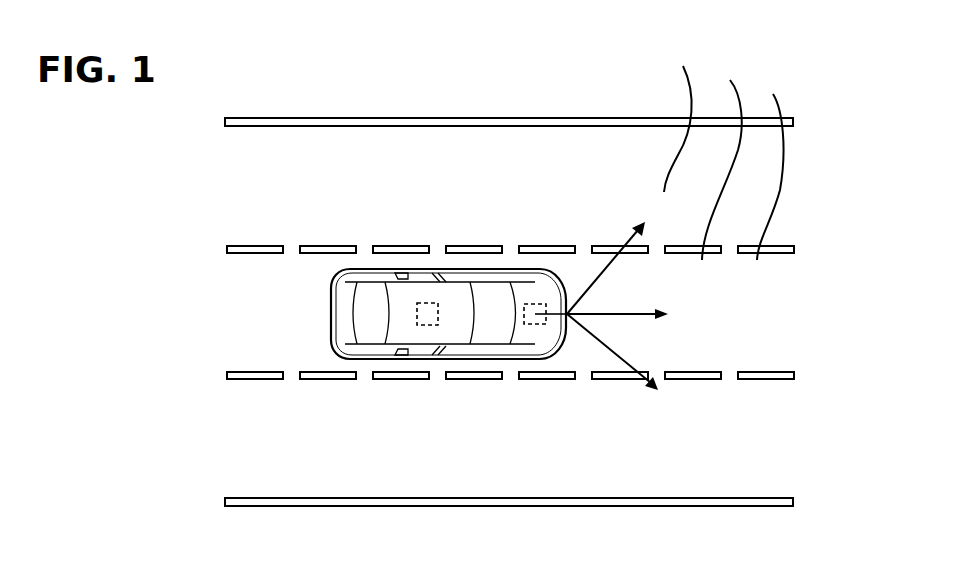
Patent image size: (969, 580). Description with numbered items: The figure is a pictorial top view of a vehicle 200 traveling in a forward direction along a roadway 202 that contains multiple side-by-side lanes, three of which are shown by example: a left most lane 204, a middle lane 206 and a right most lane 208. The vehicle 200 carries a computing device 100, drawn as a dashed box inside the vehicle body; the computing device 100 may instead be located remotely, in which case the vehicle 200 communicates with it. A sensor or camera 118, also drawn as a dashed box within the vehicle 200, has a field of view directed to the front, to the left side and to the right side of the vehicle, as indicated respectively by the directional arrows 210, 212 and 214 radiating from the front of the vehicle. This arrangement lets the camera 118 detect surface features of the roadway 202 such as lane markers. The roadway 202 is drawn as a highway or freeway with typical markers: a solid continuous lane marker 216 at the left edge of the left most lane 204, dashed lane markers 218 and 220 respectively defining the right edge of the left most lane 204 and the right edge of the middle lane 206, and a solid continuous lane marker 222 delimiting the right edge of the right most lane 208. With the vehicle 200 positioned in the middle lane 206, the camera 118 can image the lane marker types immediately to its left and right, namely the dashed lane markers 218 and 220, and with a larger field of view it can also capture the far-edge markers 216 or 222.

The computing device 100 is at (427, 325).
The sensor or camera 118 is at (533, 325).
The vehicle 200 is at (411, 256).
The roadway 202 is at (394, 110).
The left most lane 204 is at (682, 119).
The middle lane 206 is at (722, 159).
The right most lane 208 is at (771, 166).
The directional arrow 210 is at (605, 313).
The directional arrow 212 is at (603, 268).
The directional arrow 214 is at (610, 352).
The solid continuous lane marker 216 is at (548, 118).
The dashed lane marker 218 is at (260, 246).
The dashed lane marker 220 is at (260, 372).
The solid continuous lane marker 222 is at (553, 506).